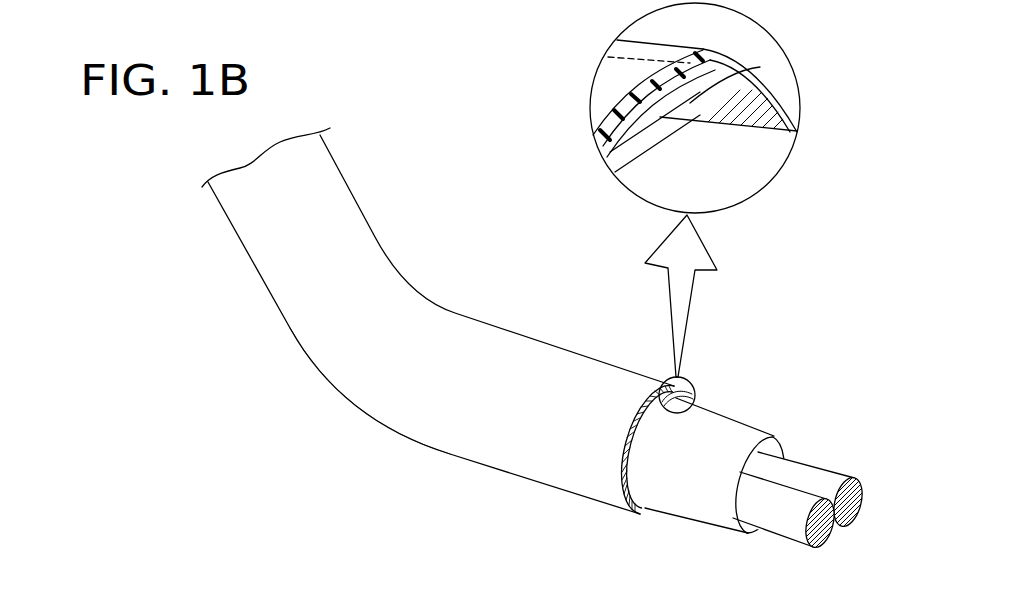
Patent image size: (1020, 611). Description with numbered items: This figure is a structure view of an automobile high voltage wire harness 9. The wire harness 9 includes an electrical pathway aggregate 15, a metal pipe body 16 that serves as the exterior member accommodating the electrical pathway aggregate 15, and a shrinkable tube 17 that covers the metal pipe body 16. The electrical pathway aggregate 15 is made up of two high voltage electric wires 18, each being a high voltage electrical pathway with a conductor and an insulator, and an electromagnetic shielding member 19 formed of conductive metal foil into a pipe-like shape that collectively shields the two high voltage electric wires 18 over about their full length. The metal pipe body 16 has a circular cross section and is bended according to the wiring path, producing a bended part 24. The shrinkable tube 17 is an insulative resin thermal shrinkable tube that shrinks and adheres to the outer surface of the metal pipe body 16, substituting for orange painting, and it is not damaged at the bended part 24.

The wire harness 9 is at (463, 245).
The electrical pathway aggregate 15 is at (759, 315).
The metal pipe body 16 is at (472, 448).
The shrinkable tube 17 is at (440, 432).
The high voltage electric wire 18 is at (810, 471).
The electromagnetic shielding member 19 is at (743, 433).
The bended part 24 is at (338, 375).